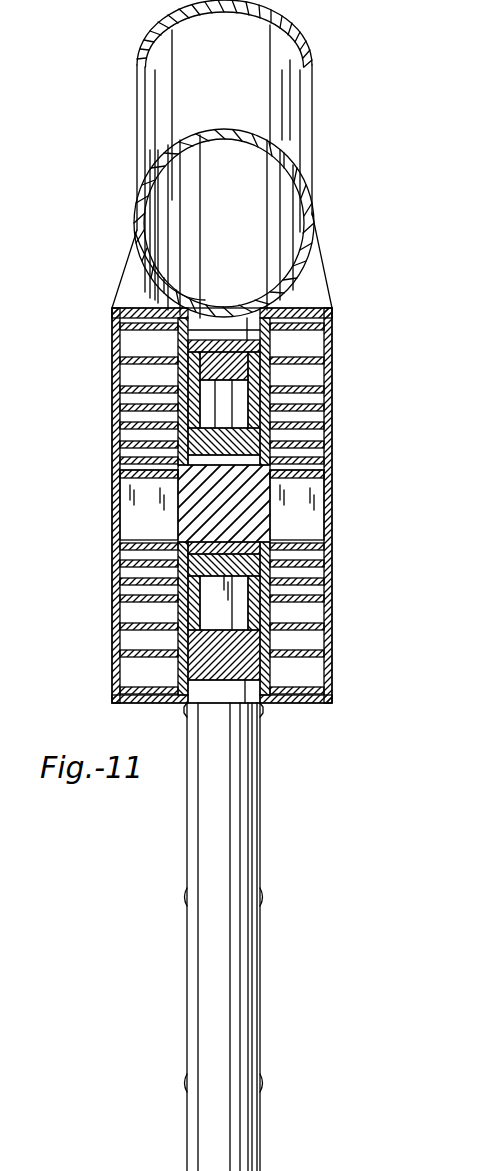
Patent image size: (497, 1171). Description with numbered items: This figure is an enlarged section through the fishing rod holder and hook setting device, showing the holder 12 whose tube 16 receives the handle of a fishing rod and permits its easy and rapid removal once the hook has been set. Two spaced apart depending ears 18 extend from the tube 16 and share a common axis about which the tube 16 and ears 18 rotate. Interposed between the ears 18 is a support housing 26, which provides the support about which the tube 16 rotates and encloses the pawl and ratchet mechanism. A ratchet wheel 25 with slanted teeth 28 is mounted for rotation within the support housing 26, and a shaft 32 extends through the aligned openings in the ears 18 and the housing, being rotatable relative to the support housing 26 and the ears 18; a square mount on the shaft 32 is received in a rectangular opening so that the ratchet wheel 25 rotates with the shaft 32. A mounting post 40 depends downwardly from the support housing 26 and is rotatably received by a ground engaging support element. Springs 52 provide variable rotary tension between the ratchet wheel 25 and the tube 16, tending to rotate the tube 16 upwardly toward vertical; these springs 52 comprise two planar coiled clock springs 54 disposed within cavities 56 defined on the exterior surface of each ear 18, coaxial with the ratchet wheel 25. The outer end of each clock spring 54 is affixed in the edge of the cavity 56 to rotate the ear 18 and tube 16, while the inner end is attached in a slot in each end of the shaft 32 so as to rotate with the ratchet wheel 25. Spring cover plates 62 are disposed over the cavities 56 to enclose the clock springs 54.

The holder 12 is at (318, 142).
The tube 16 is at (165, 100).
The depending ears 18 is at (278, 303).
The ratchet wheel 25 is at (208, 404).
The support housing 26 is at (255, 382).
The slanted teeth 28 is at (240, 411).
The shaft 32 is at (262, 497).
The mounting post 40 is at (247, 1032).
The springs 52 is at (138, 656).
The clock springs 54 is at (128, 568).
The cavities 56 is at (136, 306).
The spring cover plates 62 is at (113, 530).